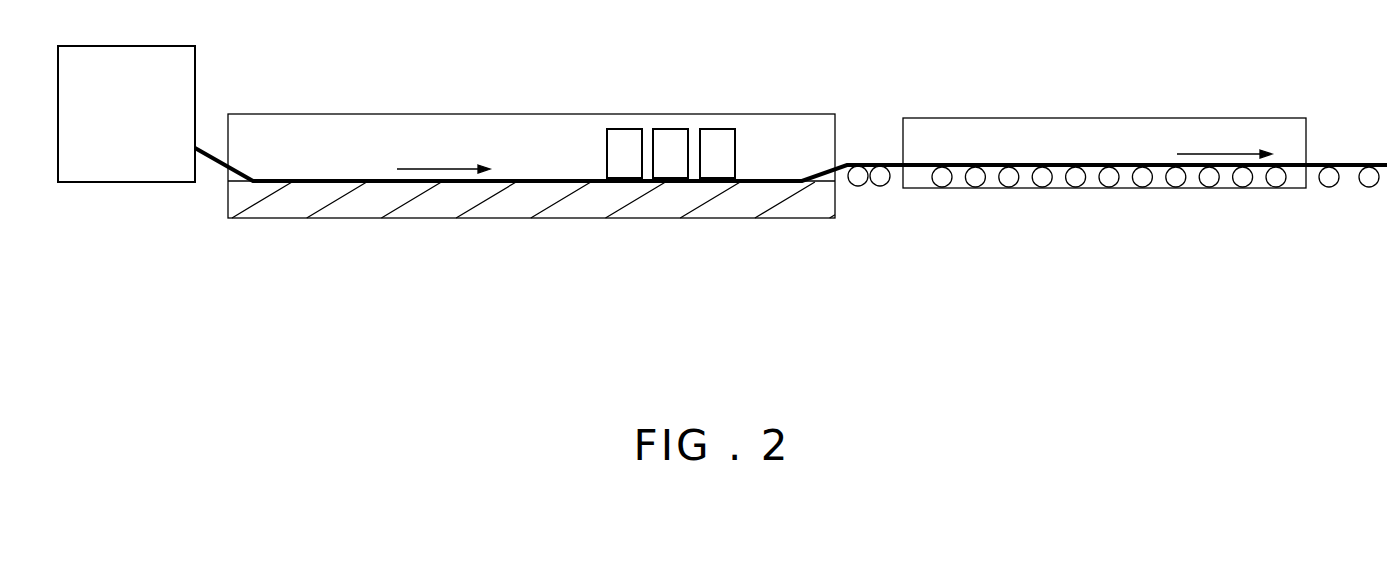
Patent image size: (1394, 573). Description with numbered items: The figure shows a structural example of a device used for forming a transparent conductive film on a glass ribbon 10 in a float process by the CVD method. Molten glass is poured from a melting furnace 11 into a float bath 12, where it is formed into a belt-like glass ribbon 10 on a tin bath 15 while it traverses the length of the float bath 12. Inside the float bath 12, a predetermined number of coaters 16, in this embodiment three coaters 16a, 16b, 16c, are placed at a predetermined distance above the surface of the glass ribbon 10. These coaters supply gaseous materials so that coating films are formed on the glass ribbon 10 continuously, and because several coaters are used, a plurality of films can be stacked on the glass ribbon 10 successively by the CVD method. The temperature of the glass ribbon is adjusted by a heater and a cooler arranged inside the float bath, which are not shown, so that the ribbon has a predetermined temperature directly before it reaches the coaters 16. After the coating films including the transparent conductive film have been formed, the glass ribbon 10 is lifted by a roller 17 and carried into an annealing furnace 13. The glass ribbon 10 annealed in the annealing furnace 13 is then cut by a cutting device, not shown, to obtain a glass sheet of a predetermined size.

The glass ribbon 10 is at (550, 182).
The melting furnace 11 is at (137, 157).
The float bath 12 is at (399, 135).
The annealing furnace 13 is at (1100, 140).
The tin bath 15 is at (352, 203).
The coaters 16 is at (657, 238).
The first coater 16a is at (620, 165).
The second coater 16b is at (667, 165).
The third coater 16c is at (711, 212).
The roller 17 is at (858, 178).